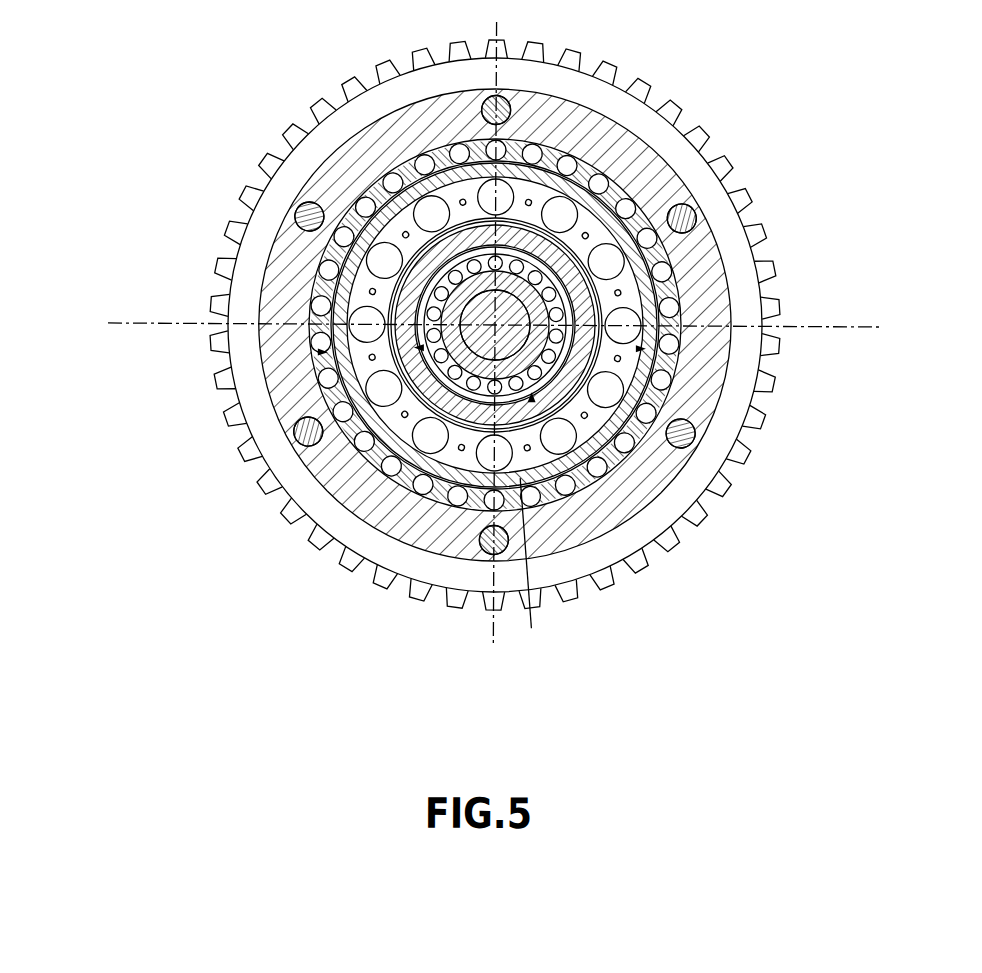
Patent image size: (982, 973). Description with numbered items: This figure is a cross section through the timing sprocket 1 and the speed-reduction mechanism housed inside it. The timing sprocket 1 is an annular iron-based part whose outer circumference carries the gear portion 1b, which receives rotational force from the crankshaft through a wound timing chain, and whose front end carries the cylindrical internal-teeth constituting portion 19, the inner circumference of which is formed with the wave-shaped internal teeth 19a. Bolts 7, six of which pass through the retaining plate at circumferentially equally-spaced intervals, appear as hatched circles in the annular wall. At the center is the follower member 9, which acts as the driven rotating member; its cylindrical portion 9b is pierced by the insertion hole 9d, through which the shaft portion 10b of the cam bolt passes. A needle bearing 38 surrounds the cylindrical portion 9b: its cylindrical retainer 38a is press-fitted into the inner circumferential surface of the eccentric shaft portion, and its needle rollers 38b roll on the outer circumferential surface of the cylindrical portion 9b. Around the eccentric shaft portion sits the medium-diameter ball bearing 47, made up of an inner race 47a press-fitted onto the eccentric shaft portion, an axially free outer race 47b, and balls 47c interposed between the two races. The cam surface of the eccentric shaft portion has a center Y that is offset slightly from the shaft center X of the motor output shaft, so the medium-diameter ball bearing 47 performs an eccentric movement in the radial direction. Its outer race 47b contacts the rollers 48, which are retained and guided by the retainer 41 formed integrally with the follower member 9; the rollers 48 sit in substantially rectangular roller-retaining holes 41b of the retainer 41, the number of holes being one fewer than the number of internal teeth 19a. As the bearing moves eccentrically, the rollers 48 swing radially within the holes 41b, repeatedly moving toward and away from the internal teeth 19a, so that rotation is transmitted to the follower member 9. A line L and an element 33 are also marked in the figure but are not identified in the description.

The timing sprocket 1 is at (752, 158).
The gear portion 1b is at (691, 110).
The bolt 7 is at (484, 101).
The follower member 9 is at (326, 403).
The cylindrical portion 9b is at (316, 503).
The insertion hole 9d is at (372, 201).
The shaft portion 10b is at (426, 464).
The internal-teeth constituting portion 19 is at (640, 374).
The internal teeth 19a is at (548, 195).
The carrier inner ring 33 is at (600, 370).
The needle bearing 38 is at (537, 423).
The retainer 38a is at (470, 406).
The needle rollers 38b is at (457, 418).
The retainer 41 is at (592, 160).
The roller-retaining holes 41b is at (420, 160).
The medium-diameter ball bearing 47 is at (222, 378).
The inner race 47a is at (645, 483).
The outer race 47b is at (697, 435).
The ball 47c is at (698, 208).
The rollers 48 is at (591, 170).
The reference line L is at (529, 567).
The shaft center X is at (134, 322).
The center Y is at (192, 318).